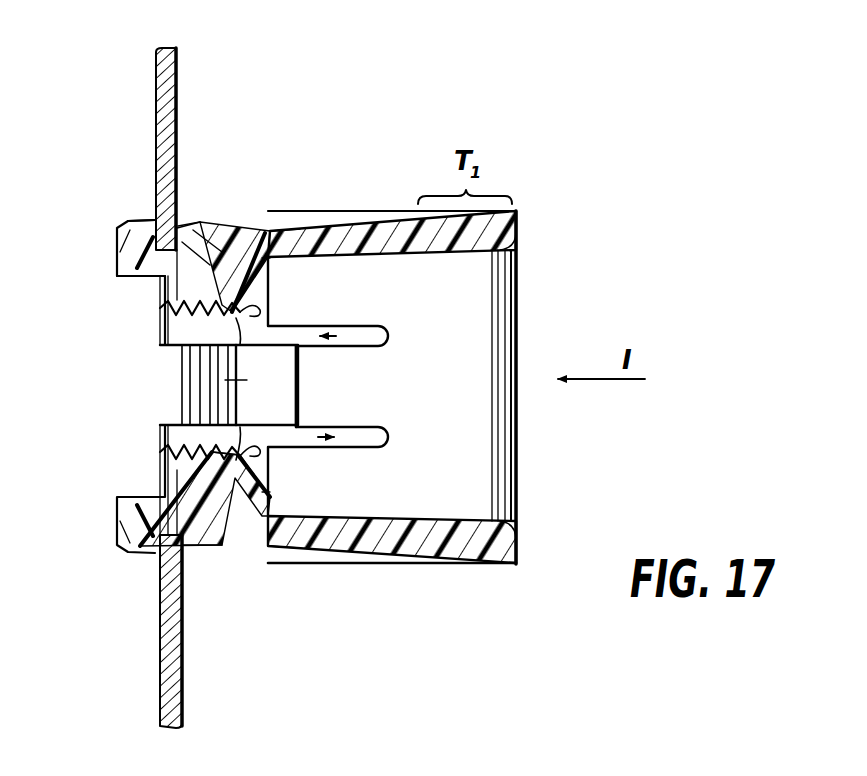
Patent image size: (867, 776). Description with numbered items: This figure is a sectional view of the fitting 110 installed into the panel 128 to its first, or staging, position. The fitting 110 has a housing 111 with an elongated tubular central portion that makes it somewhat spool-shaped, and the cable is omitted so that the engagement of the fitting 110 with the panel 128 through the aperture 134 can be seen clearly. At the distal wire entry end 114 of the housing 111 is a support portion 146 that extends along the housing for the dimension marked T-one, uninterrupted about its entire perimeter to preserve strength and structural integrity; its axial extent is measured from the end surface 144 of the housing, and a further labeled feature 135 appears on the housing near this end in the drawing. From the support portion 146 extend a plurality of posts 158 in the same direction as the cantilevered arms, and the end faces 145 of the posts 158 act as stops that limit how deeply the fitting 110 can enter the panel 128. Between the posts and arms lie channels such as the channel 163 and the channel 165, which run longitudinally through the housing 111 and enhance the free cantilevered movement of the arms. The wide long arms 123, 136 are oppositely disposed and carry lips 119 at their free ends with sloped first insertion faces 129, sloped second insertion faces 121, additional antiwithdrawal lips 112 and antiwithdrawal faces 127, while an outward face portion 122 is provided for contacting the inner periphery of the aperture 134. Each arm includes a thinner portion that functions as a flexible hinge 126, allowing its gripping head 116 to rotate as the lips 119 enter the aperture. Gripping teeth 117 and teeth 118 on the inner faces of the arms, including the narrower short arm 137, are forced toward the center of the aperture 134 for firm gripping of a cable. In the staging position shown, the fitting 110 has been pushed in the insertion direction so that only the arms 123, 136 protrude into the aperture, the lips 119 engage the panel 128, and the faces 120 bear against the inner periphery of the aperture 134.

The fitting 110 is at (502, 90).
The housing 111 is at (520, 565).
The antiwithdrawal lip 112 is at (232, 235).
The distal wire entry end 114 is at (552, 533).
The gripping head 116 is at (270, 286).
The gripping teeth 117 is at (176, 346).
The teeth 118 is at (236, 346).
The lip 119 is at (158, 226).
The face 120 is at (217, 479).
The sloped second insertion face 121 is at (190, 226).
The outward face portion 122 is at (292, 222).
The long arm 123 is at (117, 262).
The flexible hinge 126 is at (362, 258).
The antiwithdrawal face 127 is at (256, 233).
The panel 128 is at (178, 55).
The sloped first insertion face 129 is at (117, 236).
The panel aperture 134 is at (180, 262).
The lower rim 135 is at (520, 523).
The long arm 136 is at (117, 526).
The short arm 137 is at (160, 370).
The end surface 144 is at (519, 263).
The end face 145 is at (262, 312).
The support portion 146 is at (517, 213).
The post 158 is at (350, 211).
The channel 163 is at (297, 357).
The channel 165 is at (297, 404).